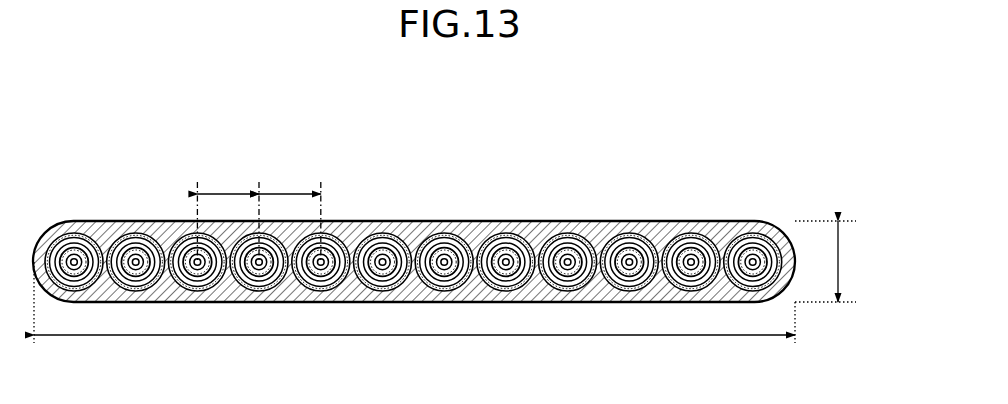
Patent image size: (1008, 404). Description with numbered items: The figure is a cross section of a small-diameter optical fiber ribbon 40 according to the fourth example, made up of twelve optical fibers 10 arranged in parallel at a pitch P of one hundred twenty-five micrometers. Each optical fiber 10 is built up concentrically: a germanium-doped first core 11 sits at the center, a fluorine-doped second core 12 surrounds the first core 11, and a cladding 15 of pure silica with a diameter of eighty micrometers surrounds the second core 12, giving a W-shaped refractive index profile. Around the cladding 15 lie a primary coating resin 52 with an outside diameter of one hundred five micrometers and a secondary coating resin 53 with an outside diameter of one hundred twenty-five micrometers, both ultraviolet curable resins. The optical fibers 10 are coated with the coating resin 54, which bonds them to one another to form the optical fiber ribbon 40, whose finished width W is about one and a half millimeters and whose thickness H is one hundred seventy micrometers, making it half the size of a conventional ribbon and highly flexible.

The optical fiber ribbon 40 is at (504, 120).
The optical fiber 10 is at (393, 221).
The first core 11 is at (615, 321).
The second core 12 is at (645, 319).
The cladding 15 is at (644, 216).
The primary coating resin 52 is at (629, 218).
The secondary coating resin 53 is at (622, 222).
The coating resin 54 is at (730, 225).